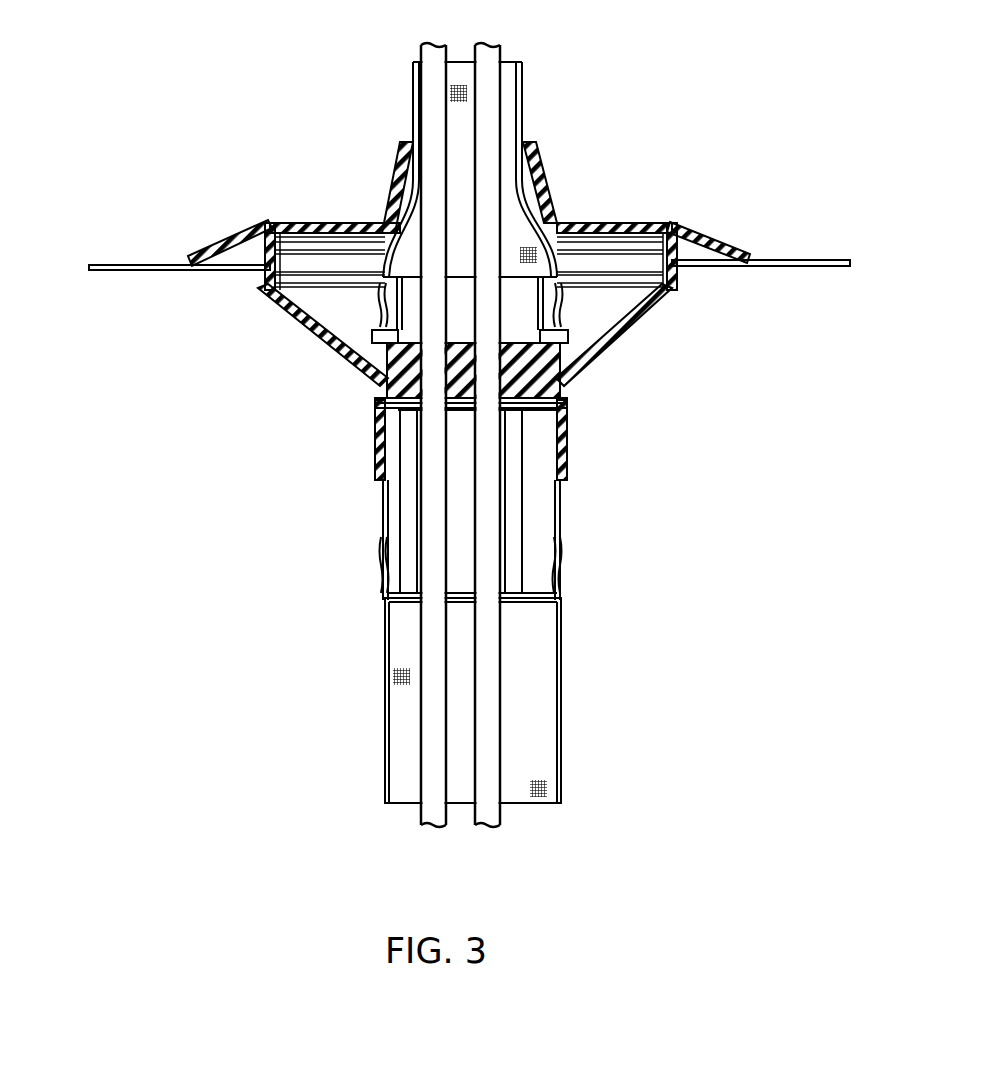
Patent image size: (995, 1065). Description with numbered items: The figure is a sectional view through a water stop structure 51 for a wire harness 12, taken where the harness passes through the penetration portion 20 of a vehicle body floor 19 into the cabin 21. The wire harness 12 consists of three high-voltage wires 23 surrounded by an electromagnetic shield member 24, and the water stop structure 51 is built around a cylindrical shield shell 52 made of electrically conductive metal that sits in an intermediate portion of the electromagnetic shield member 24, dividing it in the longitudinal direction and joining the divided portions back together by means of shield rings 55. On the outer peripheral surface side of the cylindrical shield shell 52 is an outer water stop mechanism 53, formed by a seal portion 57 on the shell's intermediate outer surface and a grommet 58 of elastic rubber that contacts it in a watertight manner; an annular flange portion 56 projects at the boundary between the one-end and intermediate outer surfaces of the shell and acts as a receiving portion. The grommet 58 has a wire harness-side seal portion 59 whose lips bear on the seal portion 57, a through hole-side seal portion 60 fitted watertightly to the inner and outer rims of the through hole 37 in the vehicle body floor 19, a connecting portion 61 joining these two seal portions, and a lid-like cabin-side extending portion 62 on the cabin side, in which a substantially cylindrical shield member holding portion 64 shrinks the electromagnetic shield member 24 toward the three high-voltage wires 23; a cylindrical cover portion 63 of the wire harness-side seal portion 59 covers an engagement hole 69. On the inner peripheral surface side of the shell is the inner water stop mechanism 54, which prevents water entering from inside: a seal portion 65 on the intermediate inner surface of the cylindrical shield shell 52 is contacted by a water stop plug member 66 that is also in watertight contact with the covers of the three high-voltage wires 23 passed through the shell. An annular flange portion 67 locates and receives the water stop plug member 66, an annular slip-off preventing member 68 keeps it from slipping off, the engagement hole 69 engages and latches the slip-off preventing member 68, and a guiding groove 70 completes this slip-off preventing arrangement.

The wire harness 12 is at (378, 751).
The vehicle body floor 19 is at (148, 264).
The penetration portion 20 is at (92, 398).
The cabin 21 is at (293, 84).
The high-voltage wires 23 is at (490, 822).
The electromagnetic shield member 24 is at (522, 103).
The through hole 37 is at (280, 257).
The water stop structure 51 is at (200, 441).
The cylindrical shield shell 52 is at (562, 503).
The outer water stop mechanism 53 is at (686, 337).
The inner water stop mechanism 54 is at (307, 396).
The shield rings 55 is at (562, 313).
The annular flange portion 56 is at (398, 352).
The seal portion 57 is at (562, 452).
The grommet 58 is at (677, 289).
The wire harness-side seal portion 59 is at (373, 452).
The through hole-side seal portion 60 is at (265, 232).
The connecting portion 61 is at (293, 323).
The cabin-side extending portion 62 is at (355, 227).
The cylindrical cover portion 63 is at (373, 478).
The shield member holding portion 64 is at (540, 157).
The seal portion 65 is at (377, 396).
The water stop plug member 66 is at (543, 413).
The annular flange portion 67 is at (470, 403).
The slip-off preventing member 68 is at (523, 565).
The engagement hole 69 is at (382, 420).
The guiding groove 70 is at (480, 593).